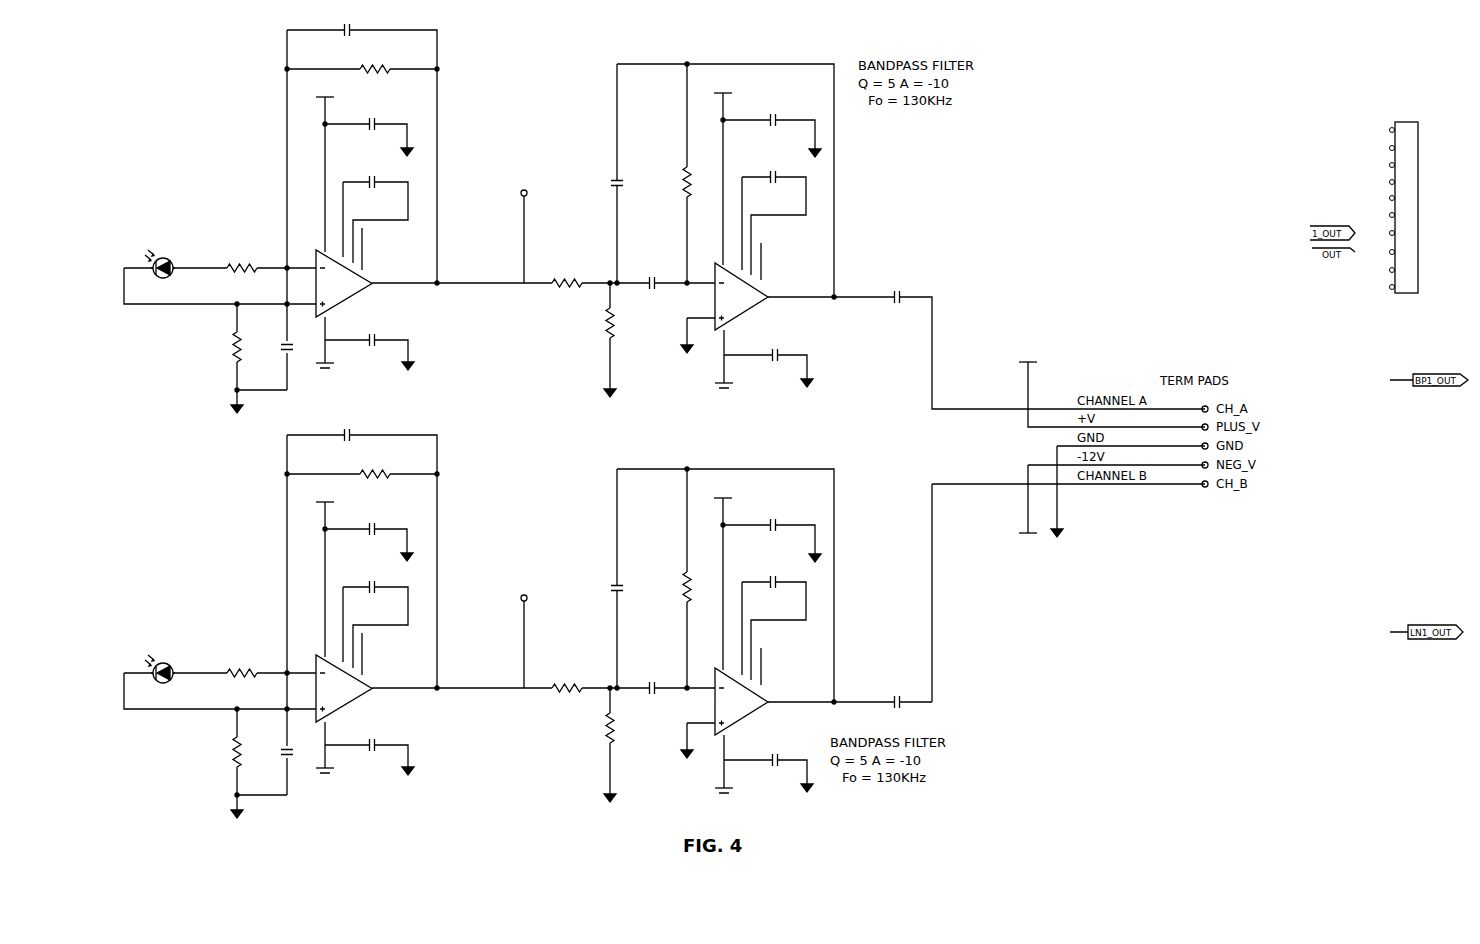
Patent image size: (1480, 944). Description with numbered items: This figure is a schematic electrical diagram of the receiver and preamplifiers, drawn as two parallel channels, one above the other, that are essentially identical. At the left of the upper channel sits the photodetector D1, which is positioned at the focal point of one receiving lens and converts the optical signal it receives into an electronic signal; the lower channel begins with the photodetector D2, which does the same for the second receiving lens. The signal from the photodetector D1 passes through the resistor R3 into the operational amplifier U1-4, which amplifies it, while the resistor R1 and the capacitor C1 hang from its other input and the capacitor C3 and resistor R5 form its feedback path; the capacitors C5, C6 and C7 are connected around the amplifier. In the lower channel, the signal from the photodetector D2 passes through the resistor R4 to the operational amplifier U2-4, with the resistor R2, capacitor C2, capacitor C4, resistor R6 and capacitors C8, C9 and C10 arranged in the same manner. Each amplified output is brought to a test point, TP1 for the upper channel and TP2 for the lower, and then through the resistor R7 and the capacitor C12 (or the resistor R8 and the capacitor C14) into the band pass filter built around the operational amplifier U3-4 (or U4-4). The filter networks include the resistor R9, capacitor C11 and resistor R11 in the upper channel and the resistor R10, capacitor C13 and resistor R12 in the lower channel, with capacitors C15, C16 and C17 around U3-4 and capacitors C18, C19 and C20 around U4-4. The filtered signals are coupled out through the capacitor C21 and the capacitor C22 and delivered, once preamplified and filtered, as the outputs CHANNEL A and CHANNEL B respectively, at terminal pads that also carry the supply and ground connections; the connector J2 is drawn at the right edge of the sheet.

The photodetector D1 is at (160, 256).
The photodetector D2 is at (160, 661).
The resistor R1 is at (228, 347).
The resistor R2 is at (228, 752).
The resistor R3 is at (242, 260).
The resistor R4 is at (242, 665).
The feedback resistor R5 is at (375, 61).
The feedback resistor R6 is at (375, 466).
The resistor R7 is at (567, 275).
The resistor R8 is at (567, 680).
The resistor R9 is at (600, 323).
The resistor R10 is at (600, 728).
The resistor R11 is at (676, 182).
The resistor R12 is at (676, 587).
The capacitor C1 is at (278, 347).
The capacitor C2 is at (278, 752).
The feedback capacitor C3 is at (347, 23).
The feedback capacitor C4 is at (347, 428).
The capacitor C5 is at (372, 117).
The capacitor C6 is at (372, 175).
The capacitor C7 is at (372, 333).
The capacitor C8 is at (372, 522).
The capacitor C9 is at (372, 580).
The capacitor C10 is at (372, 738).
The capacitor C11 is at (608, 183).
The capacitor C12 is at (652, 276).
The capacitor C13 is at (608, 588).
The capacitor C14 is at (652, 681).
The capacitor C15 is at (773, 113).
The capacitor C16 is at (773, 170).
The capacitor C17 is at (775, 348).
The capacitor C18 is at (773, 518).
The capacitor C19 is at (773, 575).
The capacitor C20 is at (775, 753).
The output coupling capacitor channel A C21 is at (897, 290).
The output coupling capacitor channel B C22 is at (897, 695).
The operational amplifier U1-4 is at (353, 283).
The operational amplifier U2-4 is at (353, 688).
The band pass filter U3-4 is at (751, 296).
The band pass filter U4-4 is at (751, 701).
The test point TP1 is at (523, 184).
The test point TP2 is at (523, 589).
The connector J2 is at (1404, 195).